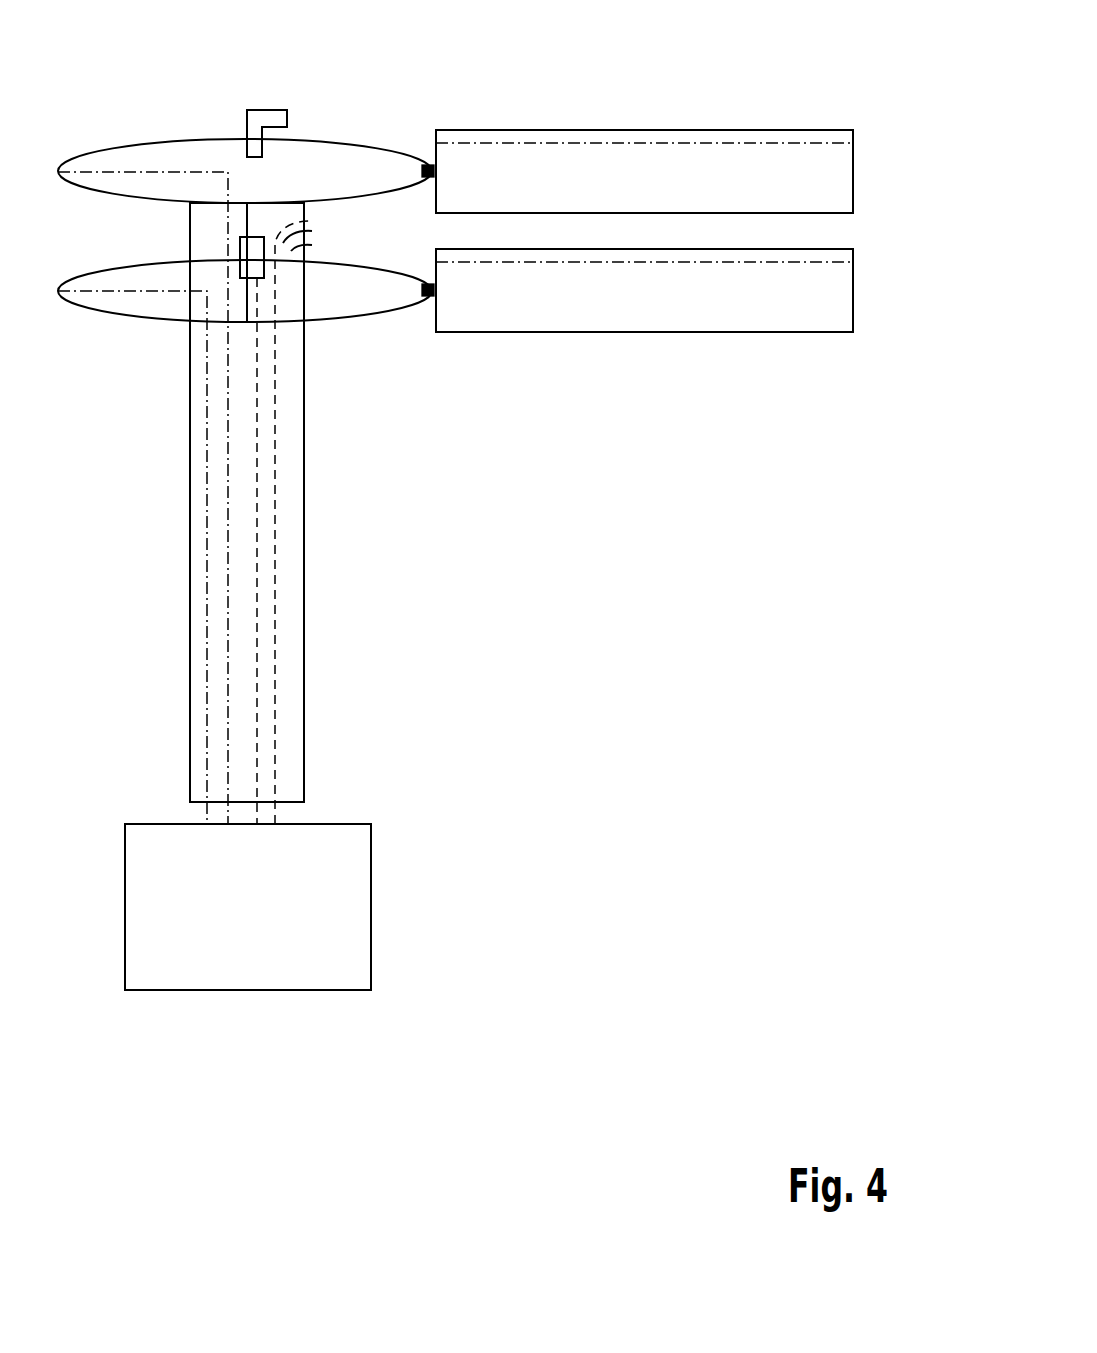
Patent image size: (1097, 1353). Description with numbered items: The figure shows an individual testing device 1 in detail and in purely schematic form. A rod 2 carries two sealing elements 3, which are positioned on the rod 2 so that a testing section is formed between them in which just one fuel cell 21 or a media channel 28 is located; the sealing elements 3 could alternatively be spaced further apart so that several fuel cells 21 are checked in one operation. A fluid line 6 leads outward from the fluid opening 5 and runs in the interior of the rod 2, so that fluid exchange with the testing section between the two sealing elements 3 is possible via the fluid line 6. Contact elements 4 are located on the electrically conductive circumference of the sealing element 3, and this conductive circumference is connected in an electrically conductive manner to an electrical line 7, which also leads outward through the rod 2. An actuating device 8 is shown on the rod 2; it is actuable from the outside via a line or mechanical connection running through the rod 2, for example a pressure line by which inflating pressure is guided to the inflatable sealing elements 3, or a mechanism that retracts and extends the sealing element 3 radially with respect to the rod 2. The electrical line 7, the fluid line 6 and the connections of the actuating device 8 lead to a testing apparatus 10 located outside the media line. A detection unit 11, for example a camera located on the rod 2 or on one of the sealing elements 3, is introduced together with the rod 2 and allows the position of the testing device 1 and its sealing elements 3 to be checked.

The testing device 1 is at (458, 670).
The rod 2 is at (304, 572).
The sealing element 3 is at (340, 138).
The contact element 4 is at (428, 165).
The fluid opening 5 is at (312, 225).
The fluid line 6 is at (275, 503).
The electrical line 7 is at (207, 388).
The actuating device 8 is at (258, 237).
The testing apparatus 10 is at (371, 908).
The detection unit 11 is at (268, 110).
The fuel cell 21 is at (853, 170).
The media channel 28 is at (660, 143).